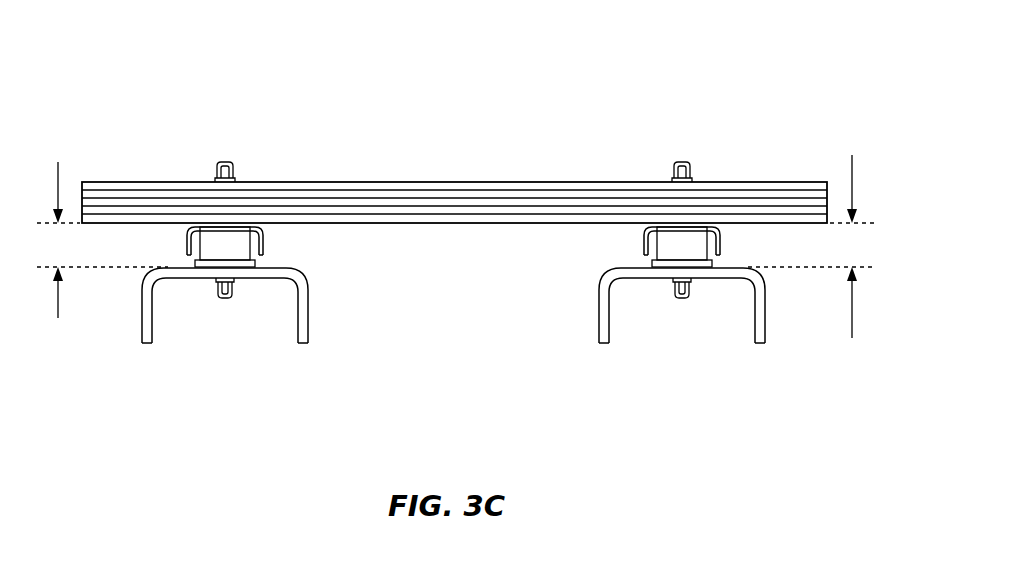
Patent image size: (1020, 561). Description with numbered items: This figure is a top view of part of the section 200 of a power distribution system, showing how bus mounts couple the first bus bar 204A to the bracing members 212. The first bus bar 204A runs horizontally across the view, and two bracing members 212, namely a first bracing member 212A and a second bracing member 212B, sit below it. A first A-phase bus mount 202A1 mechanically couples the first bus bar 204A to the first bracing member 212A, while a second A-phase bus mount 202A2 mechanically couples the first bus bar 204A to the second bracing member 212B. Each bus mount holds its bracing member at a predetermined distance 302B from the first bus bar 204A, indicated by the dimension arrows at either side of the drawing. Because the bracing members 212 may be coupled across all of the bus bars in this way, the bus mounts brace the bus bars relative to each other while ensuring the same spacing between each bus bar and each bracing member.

The section 200 is at (558, 92).
The first bus bar 204A is at (411, 182).
The distance 302B is at (58, 180).
The first A-phase bus mount 202A1 is at (276, 247).
The second A-phase bus mount 202A2 is at (628, 247).
The bracing members 212 is at (418, 332).
The first bracing member 212A is at (306, 345).
The second bracing member 212B is at (604, 345).